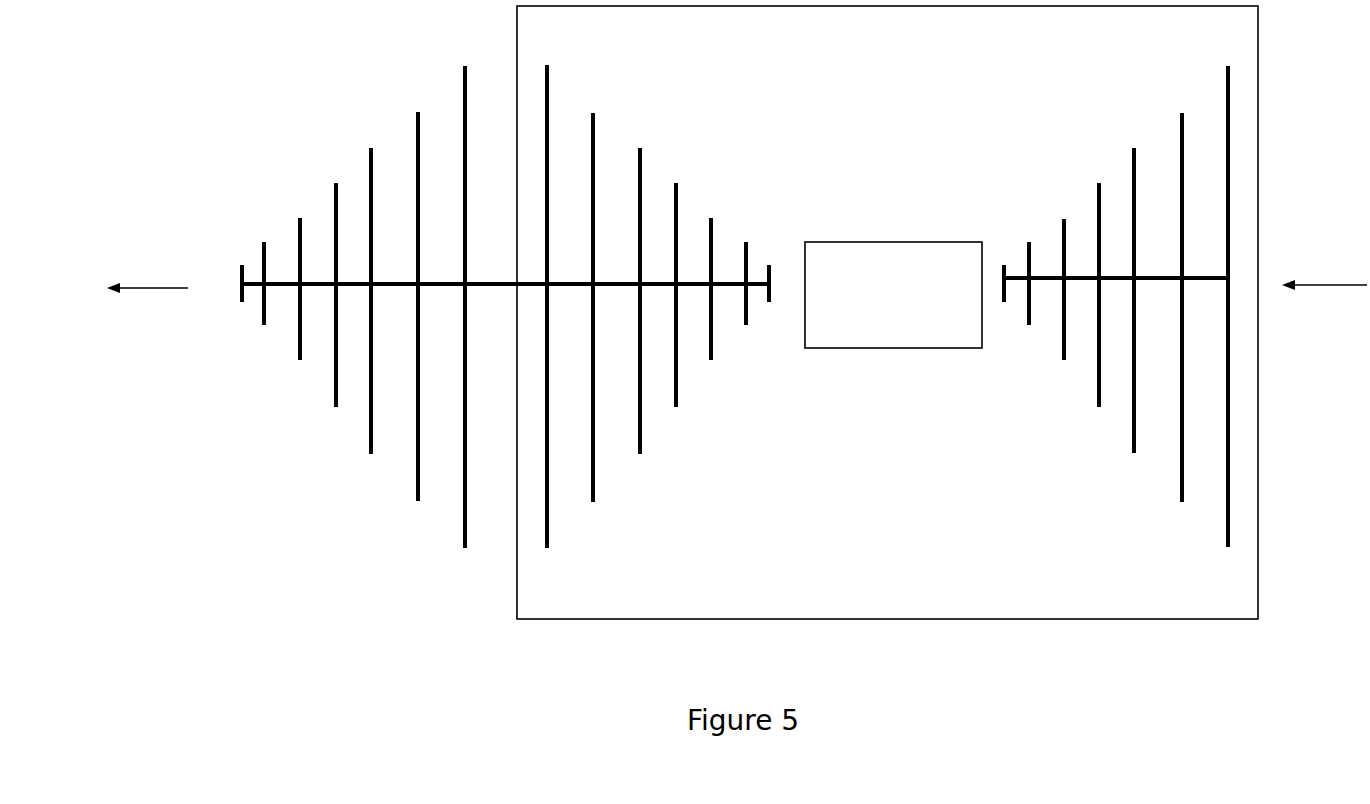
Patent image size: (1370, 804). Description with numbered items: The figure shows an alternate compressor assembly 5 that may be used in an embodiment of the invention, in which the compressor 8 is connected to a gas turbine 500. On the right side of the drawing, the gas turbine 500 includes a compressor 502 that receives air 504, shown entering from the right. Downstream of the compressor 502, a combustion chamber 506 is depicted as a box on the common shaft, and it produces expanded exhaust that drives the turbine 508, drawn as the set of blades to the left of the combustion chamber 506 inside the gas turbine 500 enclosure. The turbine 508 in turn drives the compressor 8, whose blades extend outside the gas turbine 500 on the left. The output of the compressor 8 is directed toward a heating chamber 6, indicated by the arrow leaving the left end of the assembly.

The shaft of turbine-driven compressor assembly 5 is at (498, 558).
The heating chamber 6 is at (158, 334).
The compressor 8 is at (334, 307).
The gas turbine 500 is at (887, 312).
The compressor 502 is at (1063, 464).
The air 504 is at (1323, 288).
The combustion chamber 506 is at (948, 348).
The turbine 508 is at (726, 462).